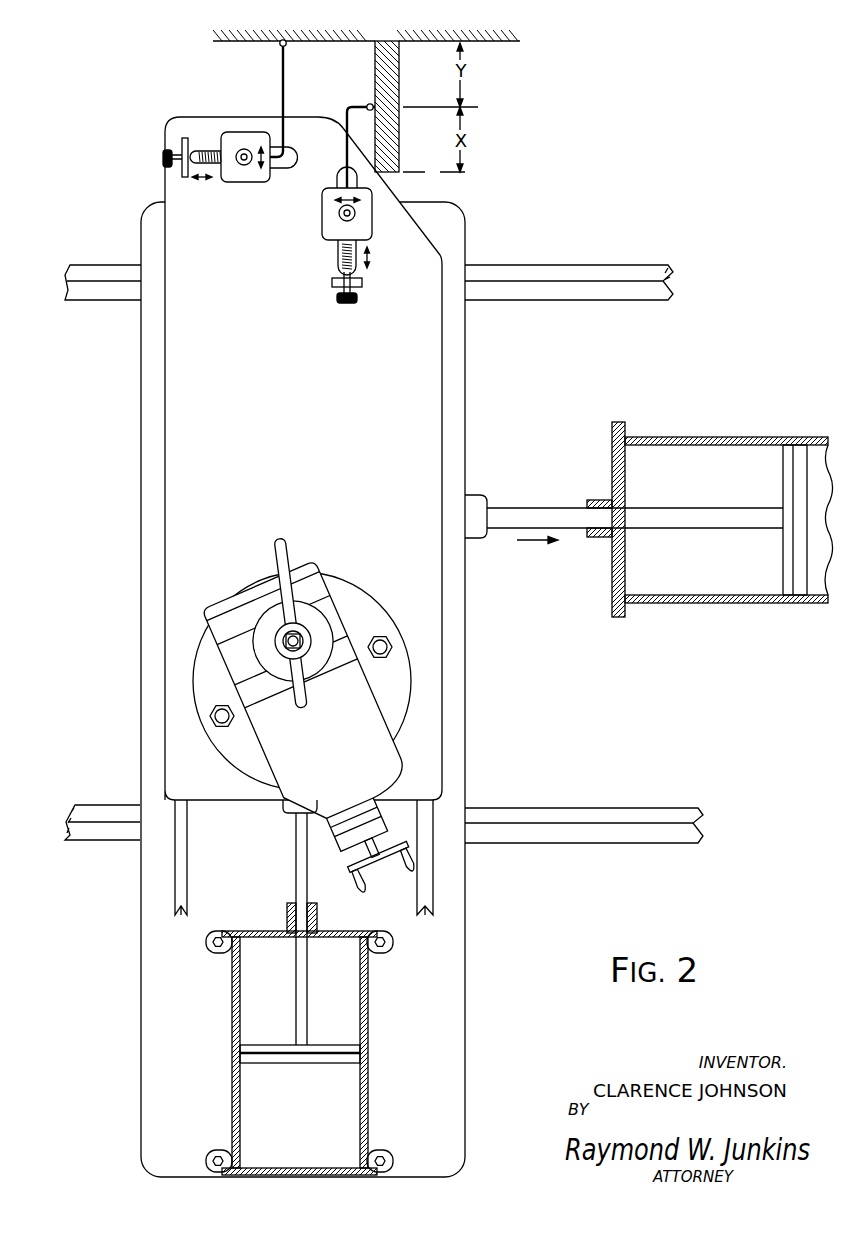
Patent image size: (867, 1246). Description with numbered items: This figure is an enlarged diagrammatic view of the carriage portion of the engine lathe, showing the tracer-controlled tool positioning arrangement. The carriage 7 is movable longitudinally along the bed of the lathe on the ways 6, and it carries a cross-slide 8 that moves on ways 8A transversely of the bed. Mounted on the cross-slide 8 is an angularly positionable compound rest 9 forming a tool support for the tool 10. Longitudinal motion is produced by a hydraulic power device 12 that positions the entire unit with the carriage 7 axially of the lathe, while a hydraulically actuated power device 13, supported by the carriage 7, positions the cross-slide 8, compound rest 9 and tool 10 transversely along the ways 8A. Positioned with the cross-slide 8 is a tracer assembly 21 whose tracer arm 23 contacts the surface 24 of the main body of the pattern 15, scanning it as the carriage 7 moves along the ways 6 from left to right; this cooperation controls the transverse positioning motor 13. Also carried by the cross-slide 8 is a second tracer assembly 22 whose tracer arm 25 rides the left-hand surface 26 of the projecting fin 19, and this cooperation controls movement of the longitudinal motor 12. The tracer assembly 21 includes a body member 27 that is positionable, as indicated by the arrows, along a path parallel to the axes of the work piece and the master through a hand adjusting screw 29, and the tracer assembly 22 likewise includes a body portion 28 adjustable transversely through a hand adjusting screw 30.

The ways 6 is at (622, 266).
The carriage 7 is at (416, 1031).
The cross-slide 8 is at (293, 412).
The ways 8A is at (181, 917).
The compound rest 9 is at (341, 759).
The tool 10 is at (293, 546).
The hydraulic power device 12 is at (705, 604).
The hydraulically actuated power device 13 is at (370, 1113).
The pattern 15 is at (237, 42).
The projecting fin 19 is at (400, 78).
The tracer assembly 21 is at (228, 209).
The tracer assembly 22 is at (383, 244).
The tracer arm 23 is at (281, 76).
The surface 24 is at (328, 42).
The tracer arm 25 is at (346, 105).
The surface 26 is at (375, 66).
The body member 27 is at (265, 184).
The body portion 28 is at (322, 230).
The hand adjusting screw 29 is at (163, 160).
The hand adjusting screw 30 is at (348, 305).